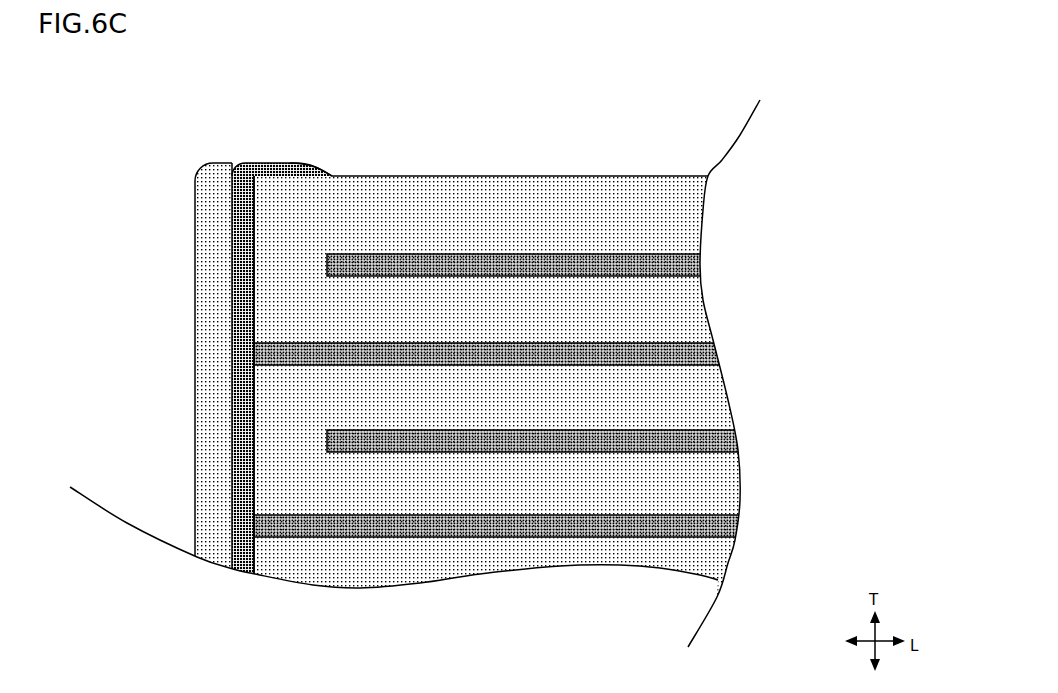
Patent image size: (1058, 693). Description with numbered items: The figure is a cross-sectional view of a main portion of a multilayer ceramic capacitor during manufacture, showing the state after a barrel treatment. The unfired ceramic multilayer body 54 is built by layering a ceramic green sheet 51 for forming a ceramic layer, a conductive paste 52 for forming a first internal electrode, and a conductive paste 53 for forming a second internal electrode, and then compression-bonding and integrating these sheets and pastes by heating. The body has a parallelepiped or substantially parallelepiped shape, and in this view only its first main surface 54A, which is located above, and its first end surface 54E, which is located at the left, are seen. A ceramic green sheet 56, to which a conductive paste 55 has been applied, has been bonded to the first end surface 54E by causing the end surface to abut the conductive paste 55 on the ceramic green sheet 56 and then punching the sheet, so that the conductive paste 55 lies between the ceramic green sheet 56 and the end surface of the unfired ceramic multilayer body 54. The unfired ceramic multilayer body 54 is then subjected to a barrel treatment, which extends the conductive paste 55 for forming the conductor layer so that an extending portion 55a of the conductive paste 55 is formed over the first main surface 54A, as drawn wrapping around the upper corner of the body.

The ceramic green sheet 51 is at (678, 213).
The conductive paste 52 is at (695, 356).
The conductive paste 53 is at (688, 262).
The unfired ceramic multilayer body 54 is at (447, 347).
The first main surface 54A is at (487, 168).
The first end surface 54E is at (238, 391).
The conductive paste 55 is at (240, 228).
The extending portion 55a is at (283, 162).
The ceramic green sheet 56 is at (218, 302).